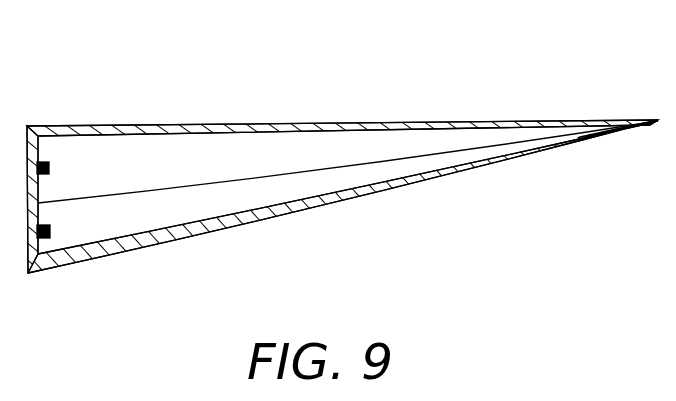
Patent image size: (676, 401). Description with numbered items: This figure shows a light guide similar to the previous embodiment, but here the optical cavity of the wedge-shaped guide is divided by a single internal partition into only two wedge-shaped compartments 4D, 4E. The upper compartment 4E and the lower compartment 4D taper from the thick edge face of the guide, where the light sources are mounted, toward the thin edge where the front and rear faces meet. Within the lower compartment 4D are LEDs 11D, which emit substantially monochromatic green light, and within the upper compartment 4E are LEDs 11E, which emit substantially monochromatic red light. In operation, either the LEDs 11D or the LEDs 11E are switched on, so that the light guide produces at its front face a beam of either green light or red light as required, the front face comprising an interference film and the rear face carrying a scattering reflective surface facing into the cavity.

The wedge-shaped compartment 4E is at (192, 146).
The wedge-shaped compartment 4D is at (206, 212).
The LEDs 11E is at (50, 168).
The LEDs 11D is at (50, 233).